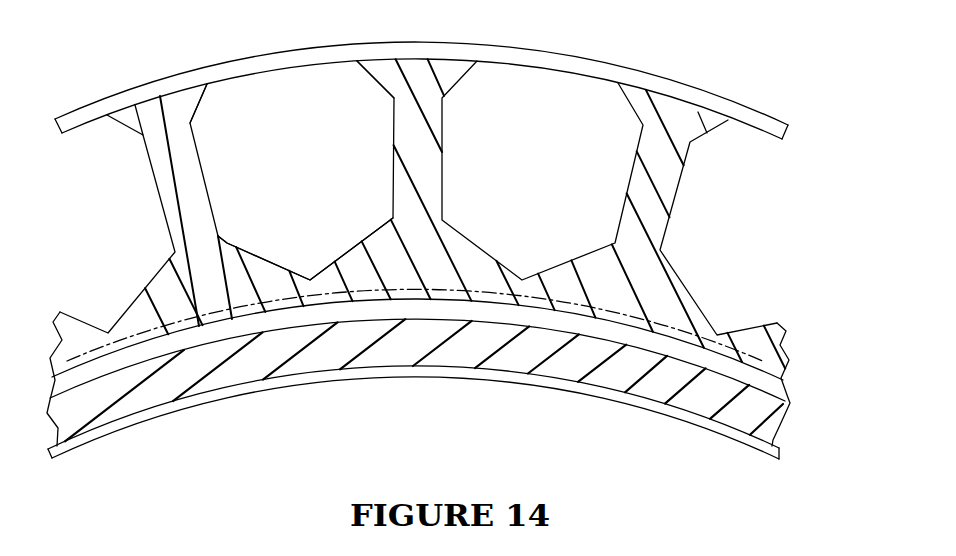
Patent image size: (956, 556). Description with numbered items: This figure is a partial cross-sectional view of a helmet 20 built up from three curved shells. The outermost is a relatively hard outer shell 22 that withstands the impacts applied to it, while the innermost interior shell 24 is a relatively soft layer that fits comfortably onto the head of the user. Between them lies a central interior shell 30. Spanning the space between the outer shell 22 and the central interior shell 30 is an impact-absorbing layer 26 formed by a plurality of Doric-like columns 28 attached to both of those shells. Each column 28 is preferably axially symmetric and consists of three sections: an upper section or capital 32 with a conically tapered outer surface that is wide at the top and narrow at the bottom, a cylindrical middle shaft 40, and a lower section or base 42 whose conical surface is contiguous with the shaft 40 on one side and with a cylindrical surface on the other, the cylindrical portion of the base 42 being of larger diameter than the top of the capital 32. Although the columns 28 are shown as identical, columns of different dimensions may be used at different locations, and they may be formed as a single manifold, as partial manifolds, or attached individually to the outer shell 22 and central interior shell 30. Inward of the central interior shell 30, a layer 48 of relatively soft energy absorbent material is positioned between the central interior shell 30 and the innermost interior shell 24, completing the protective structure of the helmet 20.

The helmet 20 is at (701, 47).
The outer shell 22 is at (560, 54).
The innermost interior shell 24 is at (630, 410).
The impact-absorbing layer 26 is at (457, 213).
The column 28 is at (622, 164).
The central interior shell 30 is at (780, 392).
The capital 32 is at (369, 88).
The shaft 40 is at (385, 160).
The base 42 is at (353, 235).
The layer of energy absorbent material 48 is at (783, 425).